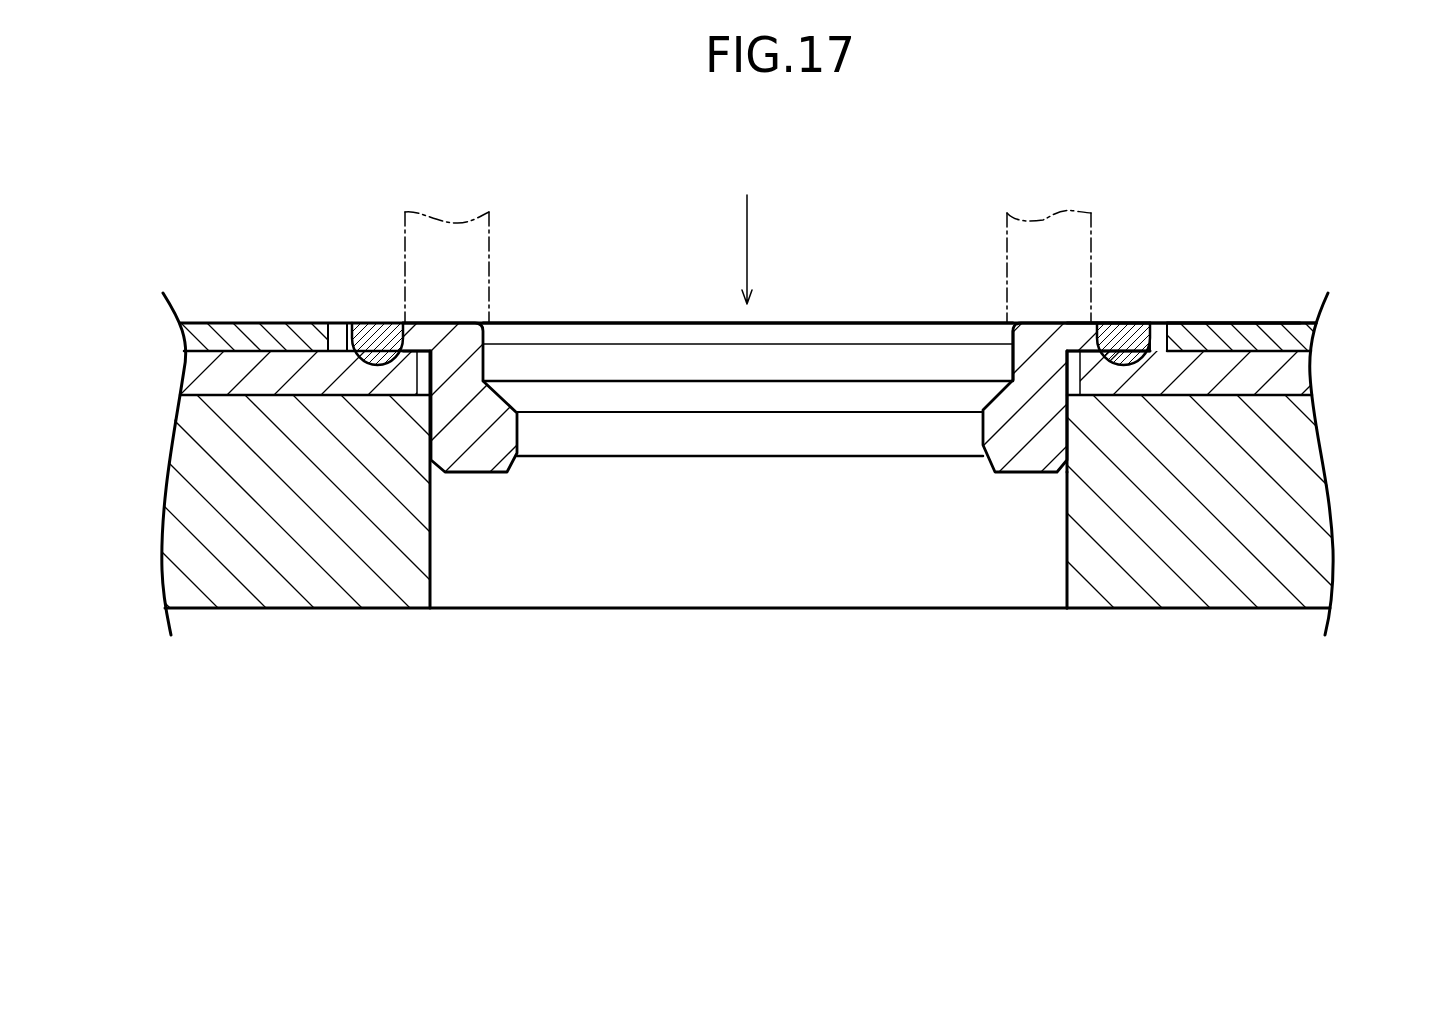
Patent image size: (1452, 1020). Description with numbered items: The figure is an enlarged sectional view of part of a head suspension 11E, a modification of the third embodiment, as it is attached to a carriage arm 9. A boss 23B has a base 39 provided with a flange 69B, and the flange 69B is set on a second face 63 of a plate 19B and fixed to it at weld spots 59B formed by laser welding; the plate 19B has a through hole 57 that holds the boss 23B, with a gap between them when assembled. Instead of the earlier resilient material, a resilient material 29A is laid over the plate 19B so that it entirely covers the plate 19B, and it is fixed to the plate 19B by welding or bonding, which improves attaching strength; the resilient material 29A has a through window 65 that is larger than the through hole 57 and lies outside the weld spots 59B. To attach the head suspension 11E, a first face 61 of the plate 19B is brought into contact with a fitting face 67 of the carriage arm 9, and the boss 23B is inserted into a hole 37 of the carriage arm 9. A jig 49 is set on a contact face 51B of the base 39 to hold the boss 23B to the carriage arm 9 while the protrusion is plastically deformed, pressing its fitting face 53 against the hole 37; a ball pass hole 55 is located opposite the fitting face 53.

The carriage arm 9 is at (1230, 580).
The head suspension 11E is at (1262, 259).
The plate 19B is at (1324, 361).
The boss 23B is at (798, 311).
The resilient material 29A is at (1288, 310).
The hole 37 is at (1063, 587).
The base 39 is at (1013, 353).
The jig 49 is at (1062, 210).
The contact face 51B is at (1048, 322).
The fitting face 53 is at (1078, 440).
The ball pass hole 55 is at (980, 440).
The through hole 57 is at (1063, 352).
The weld spots 59B is at (1122, 340).
The first face 61 is at (1313, 420).
The second face 63 is at (1313, 322).
The through window 65 is at (1158, 323).
The fitting face 67 is at (1313, 377).
The flange 69B is at (1151, 323).